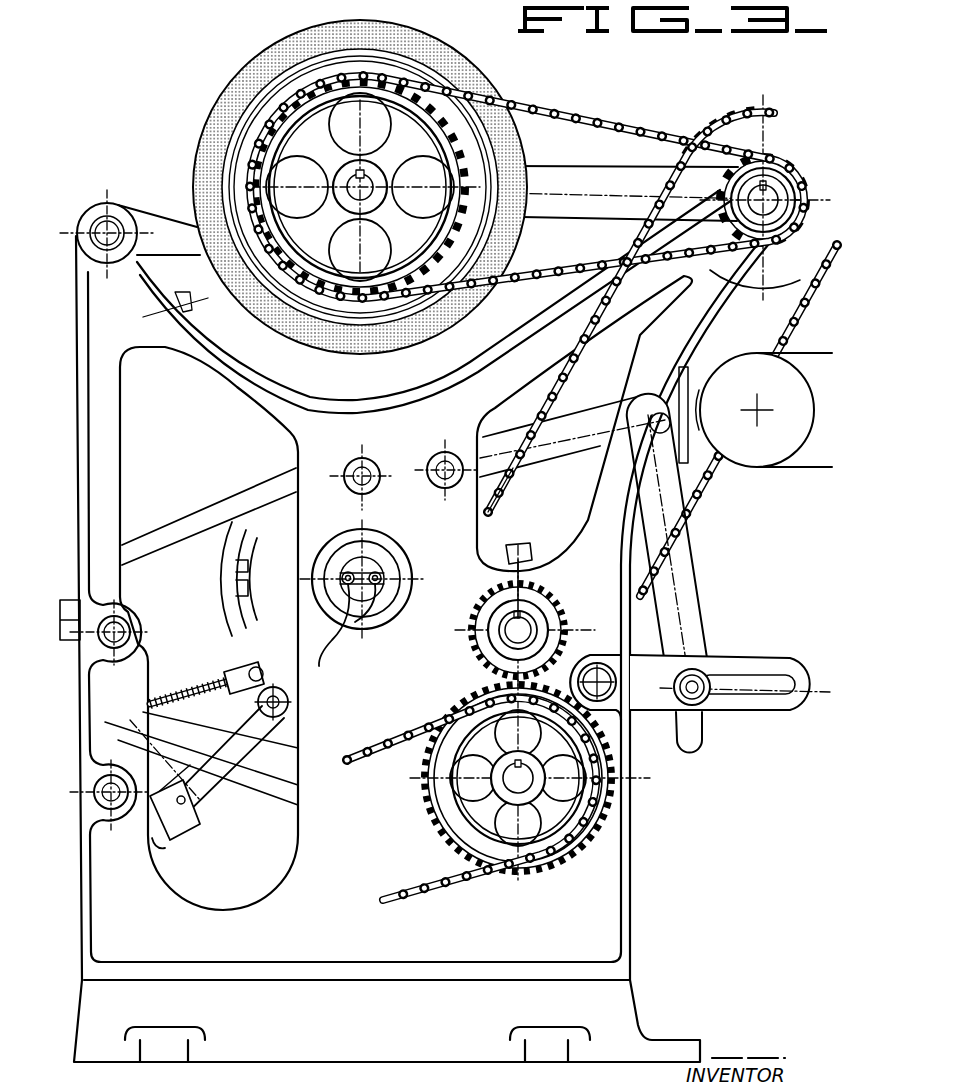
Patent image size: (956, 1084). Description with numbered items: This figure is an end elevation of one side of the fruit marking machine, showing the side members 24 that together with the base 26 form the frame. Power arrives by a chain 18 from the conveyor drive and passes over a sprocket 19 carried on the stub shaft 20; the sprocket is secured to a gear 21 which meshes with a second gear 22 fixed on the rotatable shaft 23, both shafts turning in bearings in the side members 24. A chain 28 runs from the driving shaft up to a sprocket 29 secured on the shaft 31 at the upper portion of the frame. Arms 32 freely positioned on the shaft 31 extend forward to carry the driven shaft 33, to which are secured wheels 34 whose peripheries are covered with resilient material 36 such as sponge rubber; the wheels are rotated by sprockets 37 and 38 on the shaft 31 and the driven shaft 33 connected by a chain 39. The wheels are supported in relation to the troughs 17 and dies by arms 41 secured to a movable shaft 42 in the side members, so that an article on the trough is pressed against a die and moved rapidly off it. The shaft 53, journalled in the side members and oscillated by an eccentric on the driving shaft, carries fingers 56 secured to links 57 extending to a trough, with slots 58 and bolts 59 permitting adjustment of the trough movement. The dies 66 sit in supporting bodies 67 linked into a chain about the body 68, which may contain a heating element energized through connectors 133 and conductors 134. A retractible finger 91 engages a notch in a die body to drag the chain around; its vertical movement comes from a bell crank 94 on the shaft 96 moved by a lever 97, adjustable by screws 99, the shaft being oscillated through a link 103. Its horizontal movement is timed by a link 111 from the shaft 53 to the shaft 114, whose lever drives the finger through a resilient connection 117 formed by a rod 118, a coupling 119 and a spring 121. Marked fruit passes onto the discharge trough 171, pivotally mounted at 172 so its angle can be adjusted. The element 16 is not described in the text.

The roller 16 is at (784, 468).
The trough 17 is at (583, 398).
The chain 18 is at (440, 732).
The sprocket 19 is at (440, 793).
The stub shaft 20 is at (440, 773).
The gear 21 is at (470, 706).
The second gear 22 is at (472, 641).
The rotatable shaft 23 is at (488, 625).
The side members 24 is at (632, 880).
The base 26 is at (618, 997).
The chain 28 is at (496, 500).
The sprocket 29 is at (800, 236).
The shaft 31 is at (778, 197).
The arms 32 is at (566, 175).
The driven shaft 33 is at (368, 178).
The wheels 34 is at (232, 117).
The resilient material 36 is at (207, 137).
The sprocket 37 is at (733, 184).
The sprocket 38 is at (465, 203).
The chain 39 is at (598, 125).
The arms 41 is at (160, 225).
The movable shaft 42 is at (100, 215).
The shaft 53 is at (606, 676).
The fingers 56 is at (757, 672).
The links 57 is at (690, 620).
The slots 58 is at (702, 716).
The bolts 59 is at (702, 672).
The dies 66 is at (245, 568).
The supporting bodies 67 is at (245, 584).
The body or shaft 68 is at (386, 588).
The retractible finger 91 is at (212, 606).
The bell crank 94 is at (186, 776).
The shaft 96 is at (116, 825).
The lever 97 is at (188, 826).
The screws 99 is at (186, 805).
The link 103 is at (278, 780).
The link 111 is at (286, 750).
The shaft 114 is at (135, 626).
The resilient connection 117 is at (212, 688).
The rod 118 is at (210, 716).
The coupling 119 is at (262, 708).
The spring 121 is at (170, 694).
The connectors 133 is at (344, 572).
The conductors 134 is at (322, 660).
The discharge trough 171 is at (242, 500).
The pivot mounting 172 is at (367, 470).